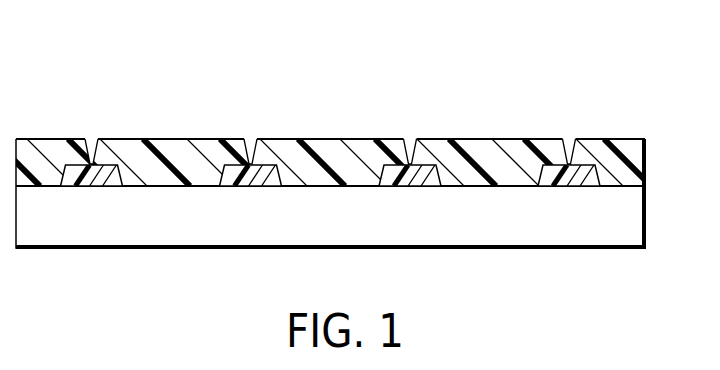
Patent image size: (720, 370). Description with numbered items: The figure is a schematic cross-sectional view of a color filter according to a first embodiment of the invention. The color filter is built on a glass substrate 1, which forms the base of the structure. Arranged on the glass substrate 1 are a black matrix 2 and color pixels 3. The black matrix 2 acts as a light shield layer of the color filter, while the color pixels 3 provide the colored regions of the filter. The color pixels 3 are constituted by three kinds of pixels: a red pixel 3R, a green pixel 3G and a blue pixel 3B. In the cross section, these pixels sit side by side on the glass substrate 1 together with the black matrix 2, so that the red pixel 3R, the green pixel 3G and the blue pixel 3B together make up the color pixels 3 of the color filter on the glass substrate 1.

The glass substrate 1 is at (622, 218).
The black matrix 2 is at (632, 159).
The color pixels 3 is at (331, 98).
The red pixel 3R is at (222, 137).
The green pixel 3G is at (350, 137).
The blue pixel 3B is at (423, 128).